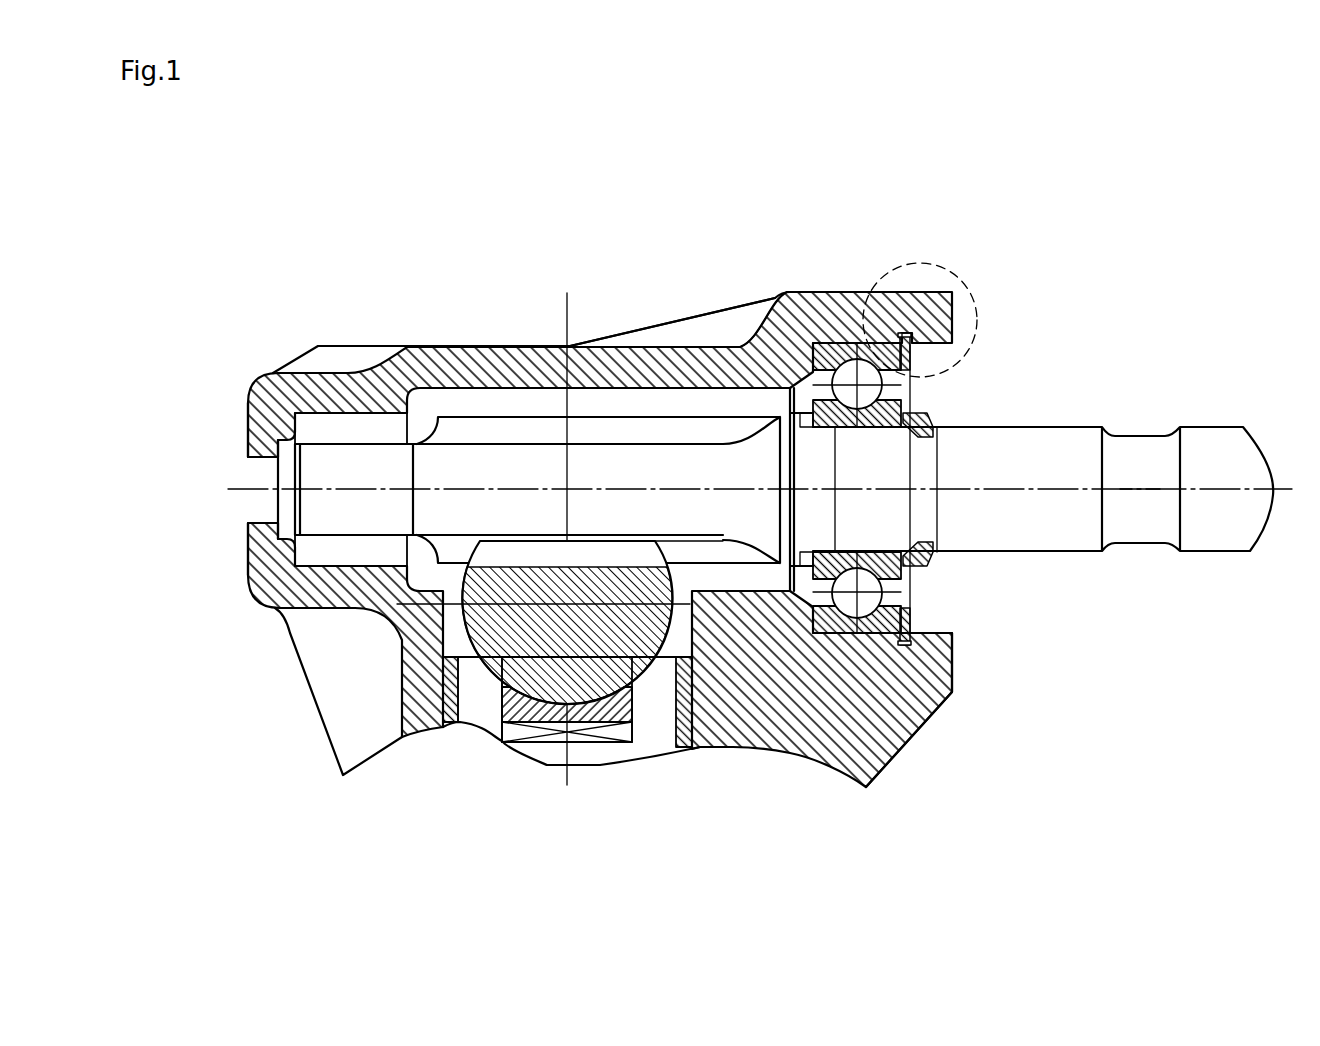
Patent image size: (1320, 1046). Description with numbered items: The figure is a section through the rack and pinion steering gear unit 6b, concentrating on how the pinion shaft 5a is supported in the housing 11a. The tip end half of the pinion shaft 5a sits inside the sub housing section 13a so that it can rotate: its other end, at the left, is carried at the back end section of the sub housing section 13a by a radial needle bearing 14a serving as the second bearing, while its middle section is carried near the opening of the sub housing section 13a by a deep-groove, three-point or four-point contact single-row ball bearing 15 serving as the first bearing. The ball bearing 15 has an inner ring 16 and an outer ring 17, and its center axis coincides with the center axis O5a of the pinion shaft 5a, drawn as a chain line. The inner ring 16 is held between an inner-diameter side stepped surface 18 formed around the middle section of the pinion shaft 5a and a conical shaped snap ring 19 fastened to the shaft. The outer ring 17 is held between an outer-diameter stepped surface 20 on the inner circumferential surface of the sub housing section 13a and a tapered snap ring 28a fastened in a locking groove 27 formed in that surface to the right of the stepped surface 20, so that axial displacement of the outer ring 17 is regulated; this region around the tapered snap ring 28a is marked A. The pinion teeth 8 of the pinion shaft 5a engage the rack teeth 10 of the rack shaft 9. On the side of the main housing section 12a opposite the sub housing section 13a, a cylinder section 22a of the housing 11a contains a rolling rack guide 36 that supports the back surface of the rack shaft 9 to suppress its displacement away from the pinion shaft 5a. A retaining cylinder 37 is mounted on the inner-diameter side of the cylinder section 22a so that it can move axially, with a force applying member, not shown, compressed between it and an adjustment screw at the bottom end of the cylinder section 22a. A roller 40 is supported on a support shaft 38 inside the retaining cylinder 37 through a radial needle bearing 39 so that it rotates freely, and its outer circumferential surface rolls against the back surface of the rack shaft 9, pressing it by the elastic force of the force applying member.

The pinion shaft 5a is at (1217, 552).
The rack and pinion steering gear unit 6b is at (288, 329).
The pinion teeth 8 is at (527, 430).
The rack shaft 9 is at (490, 616).
The rack teeth 10 is at (517, 555).
The housing 11a is at (732, 296).
The main housing section 12a is at (733, 673).
The sub housing section 13a is at (462, 372).
The radial needle bearing 14a is at (345, 425).
The ball bearing 15 is at (850, 665).
The inner ring 16 is at (857, 588).
The outer ring 17 is at (823, 342).
The inner-diameter side stepped surface 18 is at (840, 412).
The conical shaped snap ring 19 is at (938, 414).
The outer-diameter stepped surface 20 is at (792, 327).
The cylinder section 22a is at (417, 717).
The locking groove 27 is at (917, 333).
The tapered snap ring 28a is at (912, 346).
The rolling rack guide 36 is at (485, 735).
The retaining cylinder 37 is at (450, 717).
The support shaft 38 is at (605, 753).
The radial needle bearing 39 is at (620, 733).
The roller 40 is at (533, 717).
The detail region A is at (978, 298).
The center axis of the pinion shaft O5a is at (1138, 487).